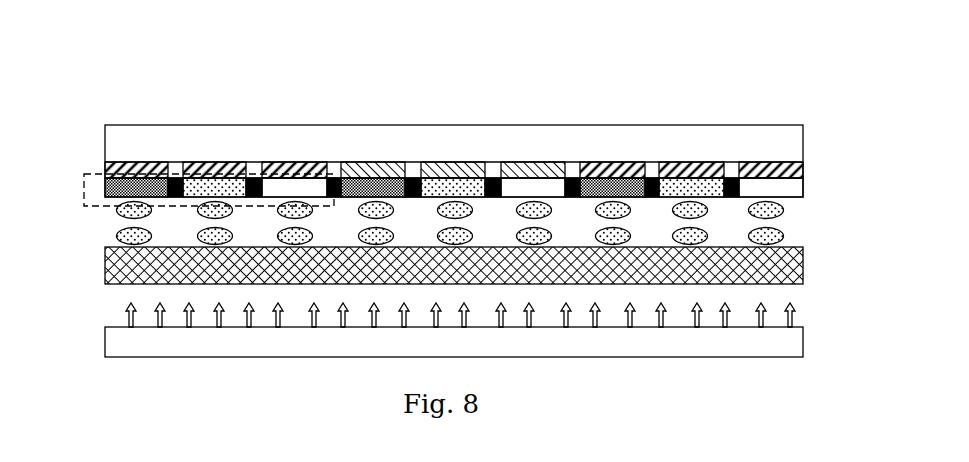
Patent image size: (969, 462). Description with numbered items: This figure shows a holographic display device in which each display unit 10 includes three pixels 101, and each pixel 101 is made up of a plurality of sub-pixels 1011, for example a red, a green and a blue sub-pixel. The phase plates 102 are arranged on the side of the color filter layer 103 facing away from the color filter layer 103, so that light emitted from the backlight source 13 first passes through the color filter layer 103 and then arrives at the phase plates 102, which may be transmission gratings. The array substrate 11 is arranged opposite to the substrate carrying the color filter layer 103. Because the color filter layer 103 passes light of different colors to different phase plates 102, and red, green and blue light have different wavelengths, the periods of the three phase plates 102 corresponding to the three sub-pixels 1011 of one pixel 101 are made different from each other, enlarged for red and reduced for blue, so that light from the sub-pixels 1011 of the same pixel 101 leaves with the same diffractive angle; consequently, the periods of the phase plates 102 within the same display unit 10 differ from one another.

The display unit 10 is at (448, 163).
The pixel 101 is at (91, 188).
The sub-pixel 1011 is at (97, 215).
The phase plate 102 is at (803, 174).
The color filter layer 103 is at (448, 215).
The array substrate 11 is at (105, 247).
The backlight source 13 is at (795, 338).